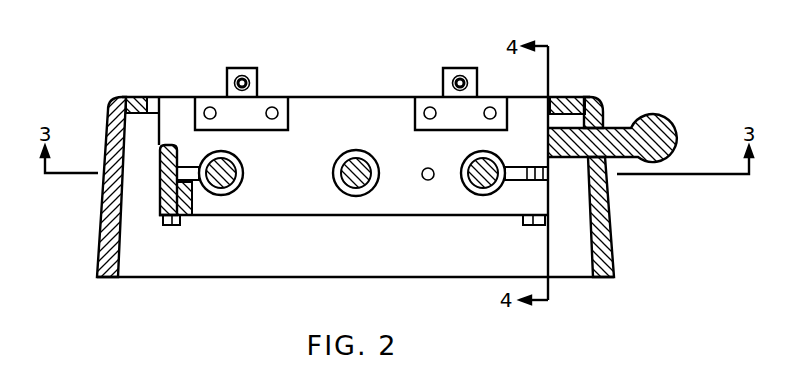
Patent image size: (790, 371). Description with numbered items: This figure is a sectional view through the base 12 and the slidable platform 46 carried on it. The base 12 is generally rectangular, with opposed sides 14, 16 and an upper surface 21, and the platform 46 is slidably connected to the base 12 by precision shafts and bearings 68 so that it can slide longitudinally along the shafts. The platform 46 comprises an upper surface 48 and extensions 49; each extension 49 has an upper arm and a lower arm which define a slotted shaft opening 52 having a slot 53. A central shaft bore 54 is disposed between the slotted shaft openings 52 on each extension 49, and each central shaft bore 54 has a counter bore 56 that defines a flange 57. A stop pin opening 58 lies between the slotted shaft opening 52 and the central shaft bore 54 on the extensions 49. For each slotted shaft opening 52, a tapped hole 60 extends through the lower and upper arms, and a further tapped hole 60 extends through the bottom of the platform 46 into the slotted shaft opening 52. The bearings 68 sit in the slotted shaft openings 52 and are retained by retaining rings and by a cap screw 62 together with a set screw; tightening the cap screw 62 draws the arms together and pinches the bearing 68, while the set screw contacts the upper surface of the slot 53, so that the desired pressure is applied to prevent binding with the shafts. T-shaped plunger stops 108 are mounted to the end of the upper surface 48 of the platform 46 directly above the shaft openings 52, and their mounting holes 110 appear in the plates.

The base 12 is at (621, 234).
The side 14 is at (609, 210).
The side 16 is at (100, 212).
The upper surface 21 is at (138, 97).
The slidable platform 46 is at (313, 90).
The upper surface 48 is at (343, 97).
The extension 49 is at (160, 155).
The slotted shaft opening 52 is at (234, 158).
The slot 53 is at (190, 167).
The central shaft bore 54 is at (353, 157).
The counter bore 56 is at (345, 192).
The flange 57 is at (373, 160).
The stop pin opening 58 is at (425, 182).
The tapped hole 60 is at (163, 225).
The cap screw 62 is at (167, 225).
The bearing 68 is at (245, 173).
The T-shaped plunger stop 108 is at (242, 68).
The mounting hole 110 is at (430, 107).